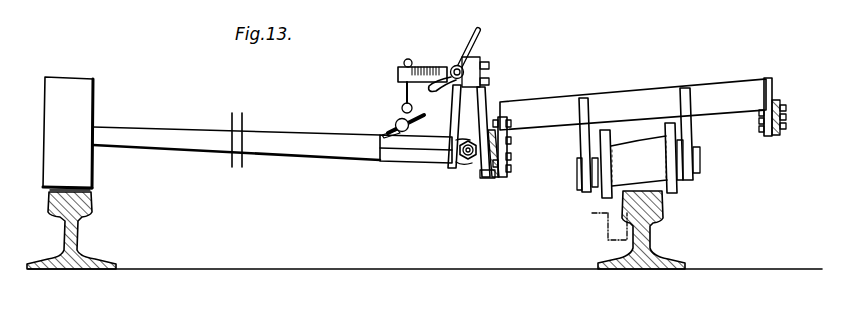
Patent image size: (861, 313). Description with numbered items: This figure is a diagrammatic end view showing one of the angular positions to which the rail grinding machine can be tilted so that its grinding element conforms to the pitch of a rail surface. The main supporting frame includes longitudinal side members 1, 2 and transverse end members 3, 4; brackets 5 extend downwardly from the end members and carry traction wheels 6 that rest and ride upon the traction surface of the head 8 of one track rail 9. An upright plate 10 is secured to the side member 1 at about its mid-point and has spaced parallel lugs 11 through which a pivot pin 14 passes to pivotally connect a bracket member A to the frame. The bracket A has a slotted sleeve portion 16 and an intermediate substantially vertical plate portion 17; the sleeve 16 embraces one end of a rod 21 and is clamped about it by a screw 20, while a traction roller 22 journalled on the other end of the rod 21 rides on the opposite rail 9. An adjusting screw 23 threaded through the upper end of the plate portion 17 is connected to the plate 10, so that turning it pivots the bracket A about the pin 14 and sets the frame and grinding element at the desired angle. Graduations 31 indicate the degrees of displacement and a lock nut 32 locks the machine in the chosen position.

The longitudinal side member 1 is at (510, 150).
The longitudinal side member 2 is at (783, 103).
The transverse end member 3 is at (630, 213).
The transverse end member 4 is at (558, 112).
The bracket 5 is at (585, 144).
The traction wheel 6 is at (652, 178).
The head 8 is at (68, 187).
The track rail 9 is at (77, 231).
The plate 10 is at (487, 100).
The lug 11 is at (469, 160).
The pivot pin 14 is at (465, 163).
The sleeve portion 16 is at (400, 150).
The plate portion 17 is at (451, 120).
The screw 20 is at (400, 119).
The rod 21 is at (278, 138).
The traction roller 22 is at (77, 98).
The adjusting screw 23 is at (422, 67).
The graduations 31 is at (442, 66).
The lock nut 32 is at (474, 56).
The bracket member A is at (451, 110).